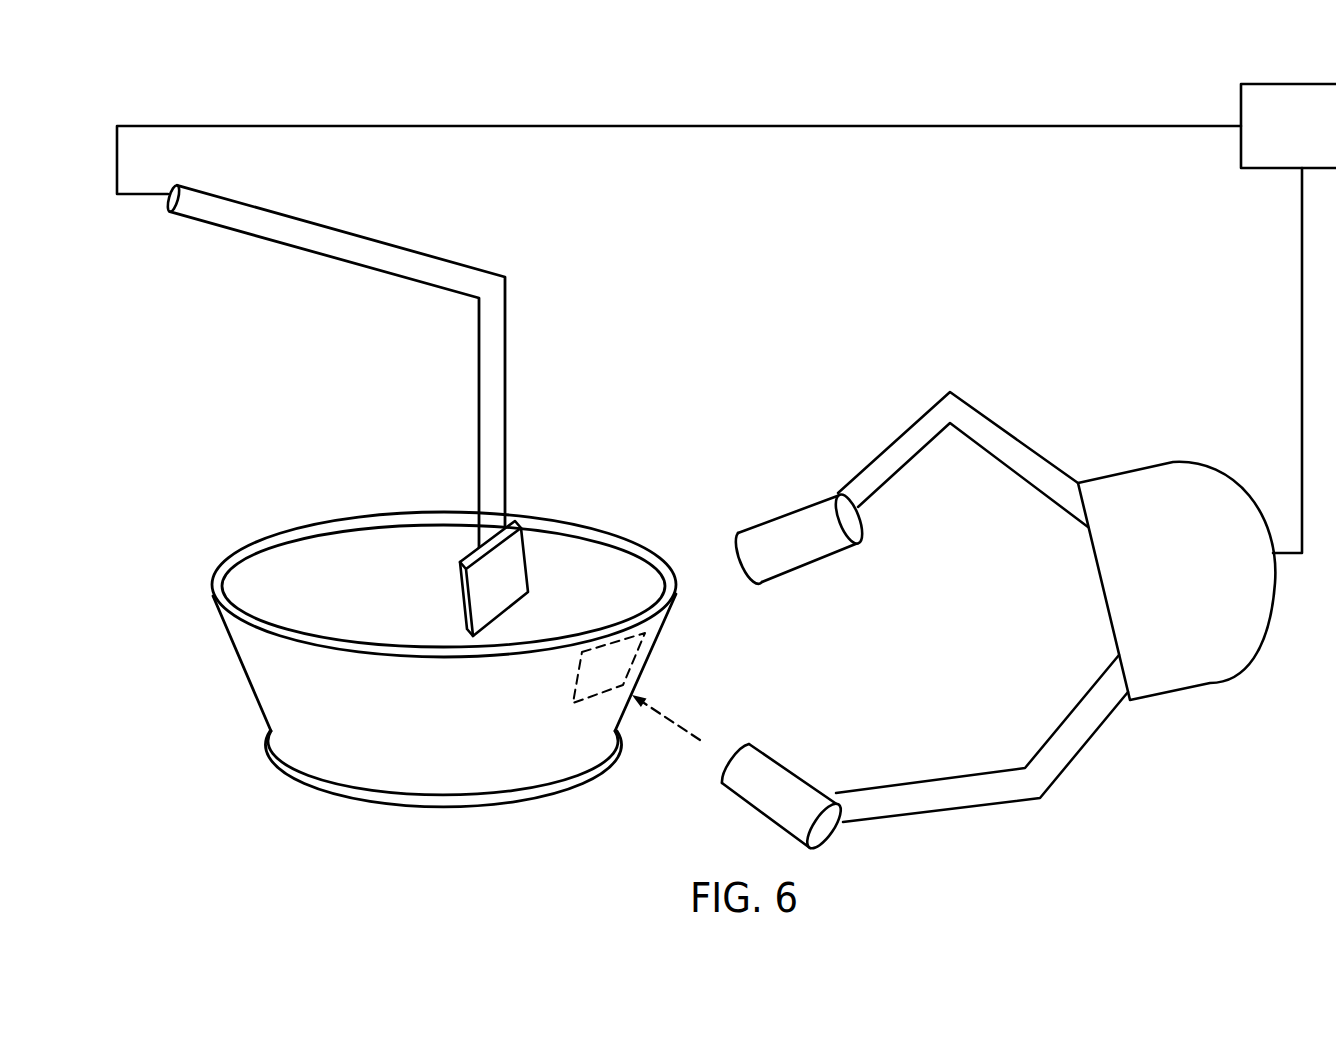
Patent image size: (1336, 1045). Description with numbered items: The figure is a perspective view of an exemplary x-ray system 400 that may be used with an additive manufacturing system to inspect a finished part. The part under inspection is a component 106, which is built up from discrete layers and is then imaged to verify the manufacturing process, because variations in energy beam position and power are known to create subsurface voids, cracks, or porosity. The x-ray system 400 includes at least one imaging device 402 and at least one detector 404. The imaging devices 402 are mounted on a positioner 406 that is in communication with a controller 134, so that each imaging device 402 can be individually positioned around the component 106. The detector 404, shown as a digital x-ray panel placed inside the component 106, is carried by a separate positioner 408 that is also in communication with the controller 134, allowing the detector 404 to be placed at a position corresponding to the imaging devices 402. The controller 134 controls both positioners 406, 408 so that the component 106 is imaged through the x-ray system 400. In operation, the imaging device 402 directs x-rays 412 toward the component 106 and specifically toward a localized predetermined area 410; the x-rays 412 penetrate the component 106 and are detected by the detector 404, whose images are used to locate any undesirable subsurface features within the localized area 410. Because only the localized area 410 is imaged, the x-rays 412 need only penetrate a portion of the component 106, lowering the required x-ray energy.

The x-ray system 400 is at (204, 77).
The controller 134 is at (1323, 139).
The positioner 408 is at (393, 244).
The detector 404 is at (499, 518).
The component 106 is at (262, 705).
The localized predetermined area 410 is at (650, 648).
The x-rays 412 is at (683, 731).
The positioner 406 is at (1149, 453).
The imaging device 402 is at (812, 574).